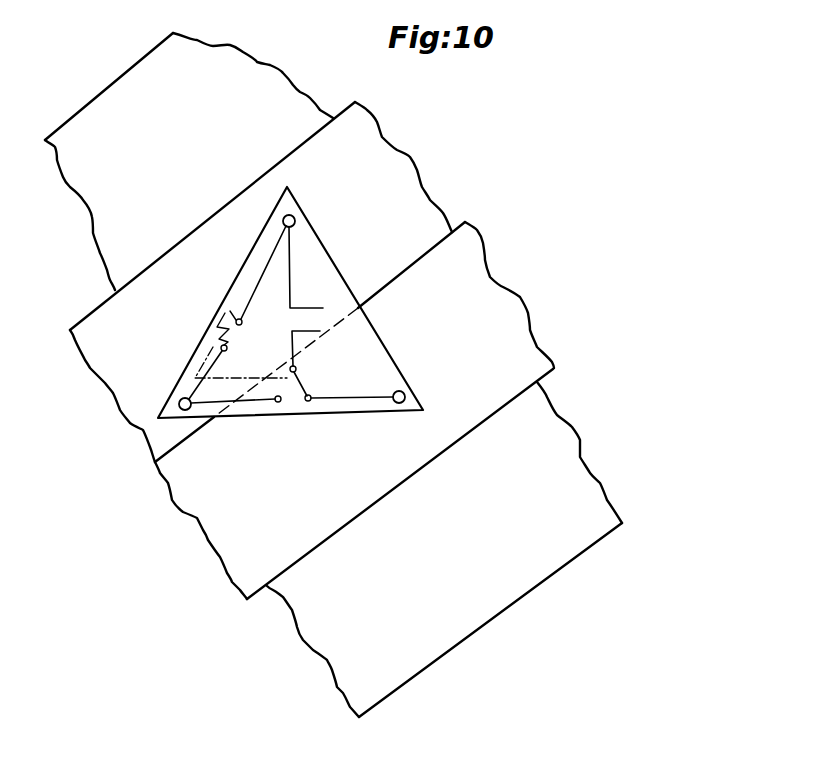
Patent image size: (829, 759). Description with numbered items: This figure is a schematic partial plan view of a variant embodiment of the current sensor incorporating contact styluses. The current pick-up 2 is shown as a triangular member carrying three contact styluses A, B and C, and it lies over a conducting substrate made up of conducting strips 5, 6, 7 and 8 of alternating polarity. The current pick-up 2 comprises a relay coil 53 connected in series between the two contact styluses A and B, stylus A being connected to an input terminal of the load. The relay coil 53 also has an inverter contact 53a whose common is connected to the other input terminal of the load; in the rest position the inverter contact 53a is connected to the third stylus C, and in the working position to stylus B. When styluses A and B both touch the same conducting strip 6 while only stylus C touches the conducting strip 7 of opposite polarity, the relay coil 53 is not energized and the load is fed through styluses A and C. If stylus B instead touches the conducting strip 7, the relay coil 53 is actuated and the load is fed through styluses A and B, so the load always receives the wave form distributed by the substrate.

The current pick-up 2 is at (324, 249).
The strip 5 is at (75, 182).
The conducting strip 6 is at (103, 362).
The conducting strip 7 is at (212, 527).
The strip 8 is at (513, 588).
The relay coil 53 is at (223, 315).
The inverter contact 53a is at (302, 383).